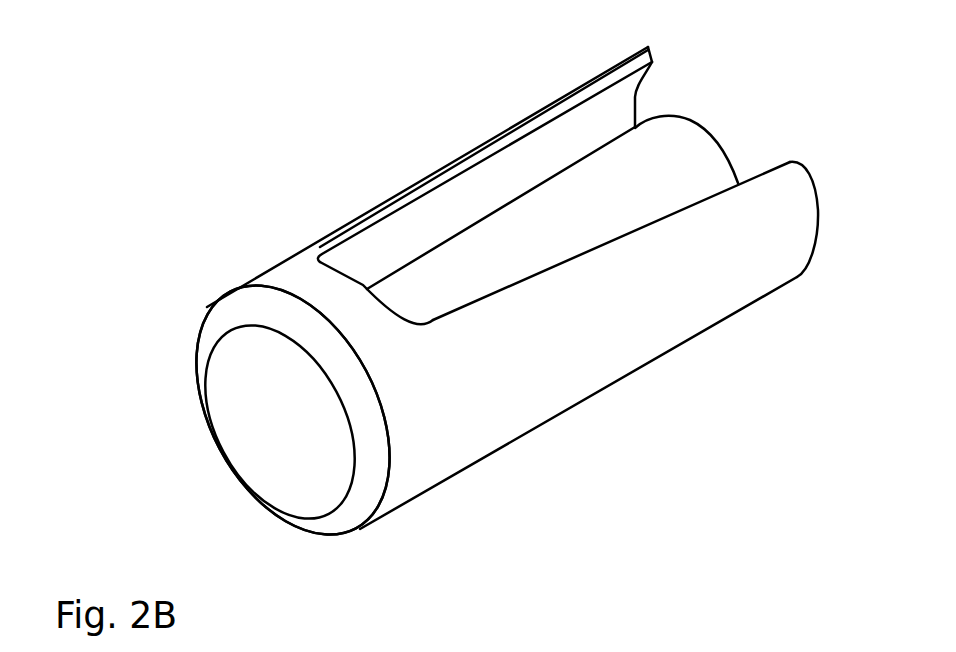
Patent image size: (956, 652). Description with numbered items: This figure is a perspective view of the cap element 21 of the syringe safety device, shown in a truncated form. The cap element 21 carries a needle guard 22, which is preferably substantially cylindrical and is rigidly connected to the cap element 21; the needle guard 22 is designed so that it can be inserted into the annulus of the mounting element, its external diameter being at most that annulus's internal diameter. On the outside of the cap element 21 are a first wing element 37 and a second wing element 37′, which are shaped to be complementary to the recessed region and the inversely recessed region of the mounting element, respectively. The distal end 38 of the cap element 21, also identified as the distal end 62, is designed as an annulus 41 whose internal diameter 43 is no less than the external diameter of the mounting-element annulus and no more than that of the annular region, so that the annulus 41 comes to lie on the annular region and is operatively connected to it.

The cap element 21 is at (293, 278).
The needle guard 22 is at (692, 157).
The first wing element 37 is at (435, 105).
The second wing element 37′ is at (732, 372).
The distal end of the cap element 38 is at (165, 405).
The annulus 41 is at (372, 487).
The internal diameter of the annulus 43 is at (346, 529).
The distal end of the cap element 62 is at (250, 454).